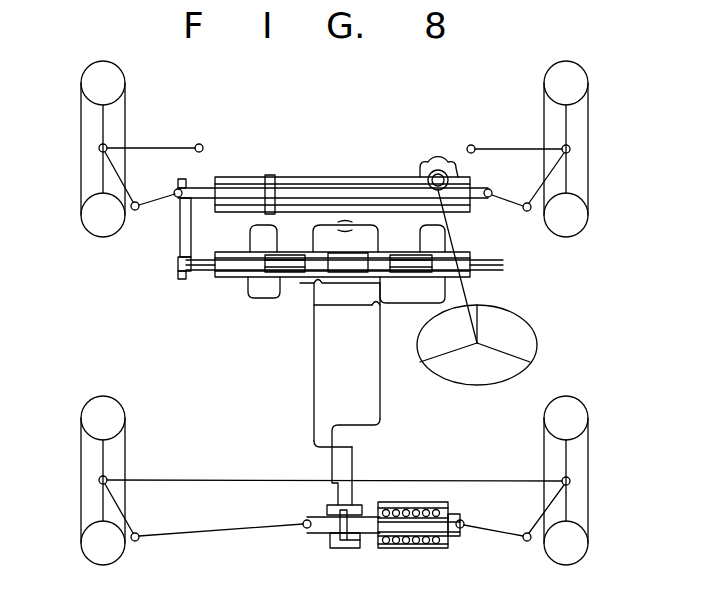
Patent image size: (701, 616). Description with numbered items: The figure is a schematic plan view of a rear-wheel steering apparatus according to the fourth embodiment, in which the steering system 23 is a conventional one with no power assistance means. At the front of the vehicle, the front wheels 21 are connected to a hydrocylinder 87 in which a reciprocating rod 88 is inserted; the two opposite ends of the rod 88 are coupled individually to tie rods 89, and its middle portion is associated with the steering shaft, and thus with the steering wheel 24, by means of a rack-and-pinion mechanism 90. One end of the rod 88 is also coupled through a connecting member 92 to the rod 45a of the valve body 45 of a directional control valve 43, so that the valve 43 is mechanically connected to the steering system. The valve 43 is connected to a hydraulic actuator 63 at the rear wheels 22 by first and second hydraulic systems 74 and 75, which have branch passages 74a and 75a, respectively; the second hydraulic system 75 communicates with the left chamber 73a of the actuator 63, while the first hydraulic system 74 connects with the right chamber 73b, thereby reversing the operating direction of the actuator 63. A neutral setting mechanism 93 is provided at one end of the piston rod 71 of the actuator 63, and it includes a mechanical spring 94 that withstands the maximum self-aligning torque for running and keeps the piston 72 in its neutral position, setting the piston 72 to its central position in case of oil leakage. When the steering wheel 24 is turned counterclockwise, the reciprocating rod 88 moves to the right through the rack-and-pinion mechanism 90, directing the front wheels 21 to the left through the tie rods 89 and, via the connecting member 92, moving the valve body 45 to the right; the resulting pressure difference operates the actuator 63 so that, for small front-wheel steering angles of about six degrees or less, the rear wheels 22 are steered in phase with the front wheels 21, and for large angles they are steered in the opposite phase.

The front wheels 21 is at (85, 84).
The rear wheels 22 is at (126, 418).
The power-steering system 23 is at (352, 166).
The steering wheel 24 is at (530, 354).
The directional control valve 43 is at (296, 274).
The valve body 45 is at (360, 248).
The rod 45a is at (240, 272).
The hydraulic actuator 63 is at (342, 550).
The piston rod 71 is at (314, 523).
The piston 72 is at (322, 506).
The left chamber 73a is at (332, 541).
The right chamber 73b is at (356, 540).
The first hydraulic system 74 is at (312, 374).
The branch passage 74a is at (397, 326).
The second hydraulic system 75 is at (384, 402).
The branch passage 75a is at (338, 303).
The hydrocylinder 87 is at (301, 180).
The reciprocating rod 88 is at (235, 191).
The tie rods 89 is at (144, 206).
The rack-and-pinion mechanism 90 is at (432, 174).
The connecting member 92 is at (190, 234).
The neutral setting mechanism 93 is at (434, 506).
The mechanical spring 94 is at (396, 506).